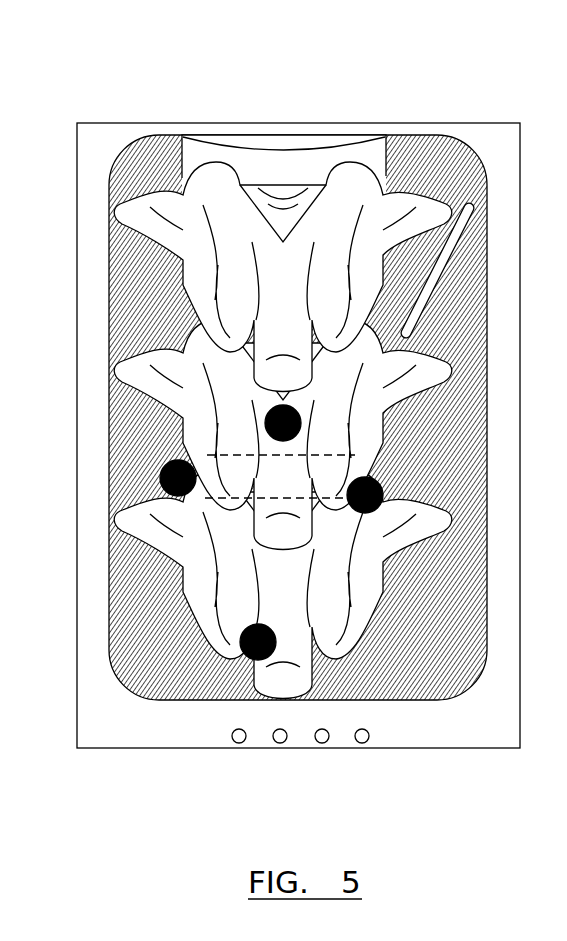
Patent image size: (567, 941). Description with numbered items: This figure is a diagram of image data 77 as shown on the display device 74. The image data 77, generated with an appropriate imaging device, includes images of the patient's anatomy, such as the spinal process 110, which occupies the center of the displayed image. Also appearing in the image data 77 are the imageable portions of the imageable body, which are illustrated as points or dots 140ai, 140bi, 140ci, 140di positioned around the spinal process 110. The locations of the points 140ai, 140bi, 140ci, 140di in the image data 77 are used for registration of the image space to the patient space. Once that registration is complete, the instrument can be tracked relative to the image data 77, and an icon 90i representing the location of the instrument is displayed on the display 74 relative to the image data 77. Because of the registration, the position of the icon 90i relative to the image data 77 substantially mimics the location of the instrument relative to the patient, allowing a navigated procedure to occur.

The display device 74 is at (430, 118).
The image data 77 is at (160, 172).
The icon 90i is at (468, 204).
The spinal process 110 is at (275, 372).
The point or dot 140ai is at (240, 641).
The point or dot 140bi is at (162, 482).
The point or dot 140ci is at (265, 423).
The point or dot 140di is at (372, 512).